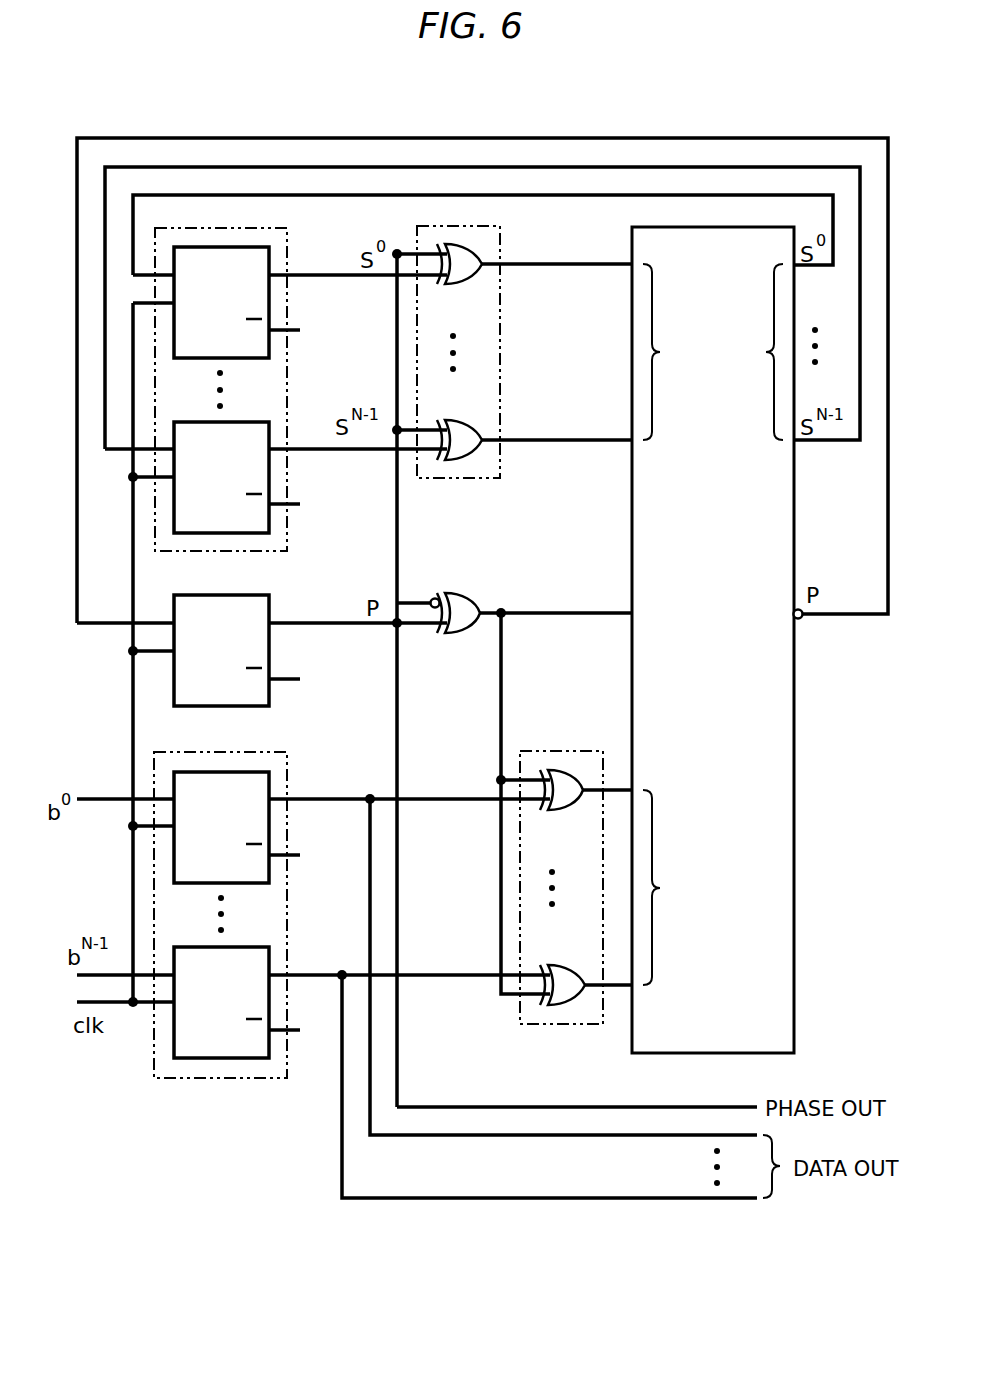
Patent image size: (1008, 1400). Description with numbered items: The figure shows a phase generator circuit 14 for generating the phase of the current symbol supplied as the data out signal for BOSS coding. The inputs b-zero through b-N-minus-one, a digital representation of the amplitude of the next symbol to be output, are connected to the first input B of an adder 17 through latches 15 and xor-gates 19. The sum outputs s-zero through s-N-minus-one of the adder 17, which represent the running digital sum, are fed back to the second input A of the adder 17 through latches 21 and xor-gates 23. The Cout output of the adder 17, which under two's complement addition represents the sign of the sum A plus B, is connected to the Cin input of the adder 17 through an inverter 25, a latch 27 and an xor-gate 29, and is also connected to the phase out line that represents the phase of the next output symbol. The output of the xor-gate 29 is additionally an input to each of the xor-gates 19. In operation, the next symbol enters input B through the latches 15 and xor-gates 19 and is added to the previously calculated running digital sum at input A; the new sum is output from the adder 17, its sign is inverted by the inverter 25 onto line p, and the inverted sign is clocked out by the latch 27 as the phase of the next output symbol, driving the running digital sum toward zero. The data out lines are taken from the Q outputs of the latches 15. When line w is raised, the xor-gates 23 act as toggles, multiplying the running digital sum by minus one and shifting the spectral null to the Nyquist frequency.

The phase generator circuit 14 is at (205, 118).
The latches 15 is at (290, 783).
The adder 17 is at (794, 826).
The xor-gates 19 is at (556, 748).
The latches 21 is at (290, 258).
The xor-gates 23 is at (500, 353).
The inverter 25 is at (803, 618).
The latch 27 is at (269, 608).
The xor-gate 29 is at (468, 633).